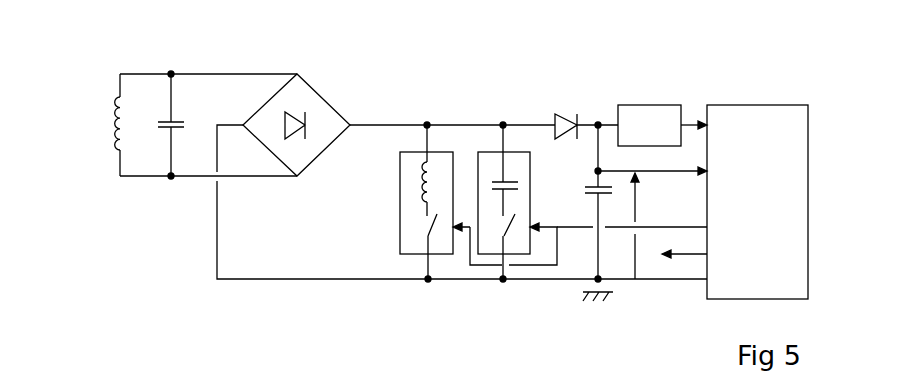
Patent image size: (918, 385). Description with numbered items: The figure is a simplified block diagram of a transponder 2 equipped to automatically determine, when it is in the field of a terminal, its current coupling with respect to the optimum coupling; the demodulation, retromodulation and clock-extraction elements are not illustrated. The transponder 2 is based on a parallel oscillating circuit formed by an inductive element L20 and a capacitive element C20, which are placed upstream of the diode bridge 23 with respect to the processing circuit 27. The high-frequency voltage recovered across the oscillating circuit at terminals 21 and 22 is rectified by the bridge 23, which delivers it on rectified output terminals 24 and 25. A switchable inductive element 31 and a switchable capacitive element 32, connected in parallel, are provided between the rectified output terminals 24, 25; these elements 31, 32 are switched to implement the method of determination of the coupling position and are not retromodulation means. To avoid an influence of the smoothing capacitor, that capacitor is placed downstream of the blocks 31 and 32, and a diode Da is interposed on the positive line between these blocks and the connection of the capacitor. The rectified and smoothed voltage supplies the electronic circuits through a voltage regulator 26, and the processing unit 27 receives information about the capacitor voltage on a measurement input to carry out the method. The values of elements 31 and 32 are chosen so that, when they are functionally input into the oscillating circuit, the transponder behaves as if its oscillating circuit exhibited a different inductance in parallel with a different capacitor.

The transponder 2 is at (606, 58).
The terminal 21 is at (172, 71).
The terminal 22 is at (171, 176).
The diode bridge 23 is at (328, 92).
The rectified output terminal 24 is at (427, 121).
The rectified output terminal 25 is at (428, 280).
The voltage regulator 26 is at (642, 103).
The processing unit 27 is at (745, 103).
The switchable inductive element 31 is at (453, 163).
The switchable capacitive element 32 is at (530, 195).
The diode Da is at (573, 111).
The inductive element L20 is at (93, 125).
The capacitive element C20 is at (185, 125).